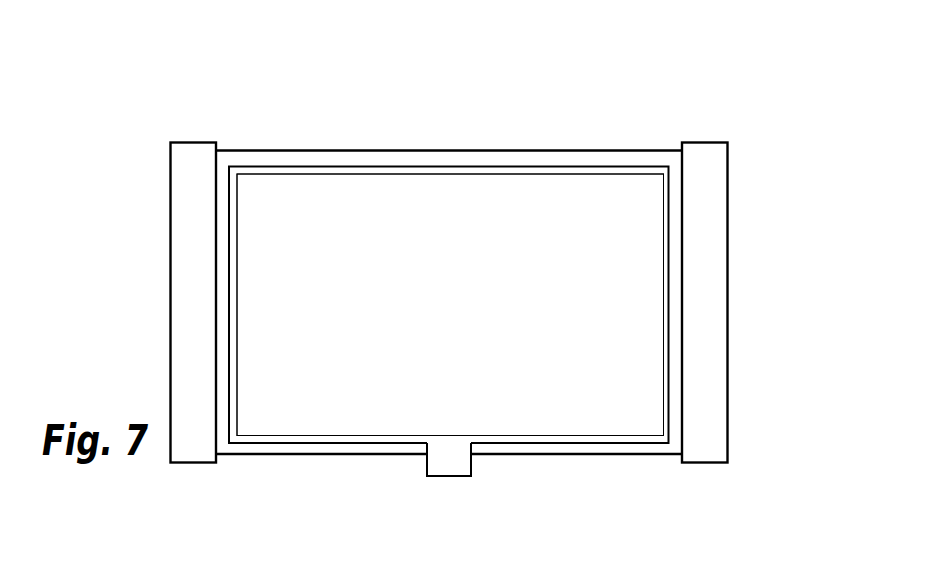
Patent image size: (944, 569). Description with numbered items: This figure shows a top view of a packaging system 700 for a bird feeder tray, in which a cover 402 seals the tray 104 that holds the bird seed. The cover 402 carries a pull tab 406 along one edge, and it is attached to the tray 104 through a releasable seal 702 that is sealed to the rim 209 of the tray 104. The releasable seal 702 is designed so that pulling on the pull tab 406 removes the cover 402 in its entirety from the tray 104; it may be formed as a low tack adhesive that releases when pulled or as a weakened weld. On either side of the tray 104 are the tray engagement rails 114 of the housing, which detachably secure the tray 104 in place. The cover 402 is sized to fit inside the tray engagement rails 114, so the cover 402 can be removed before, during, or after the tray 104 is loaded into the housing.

The packaging system 700 is at (247, 97).
The tray engagement rails 114 is at (187, 237).
The tray 104 is at (585, 150).
The rim 209 is at (397, 150).
The releasable seal 702 is at (433, 174).
The cover 402 is at (528, 203).
The pull tab 406 is at (463, 463).